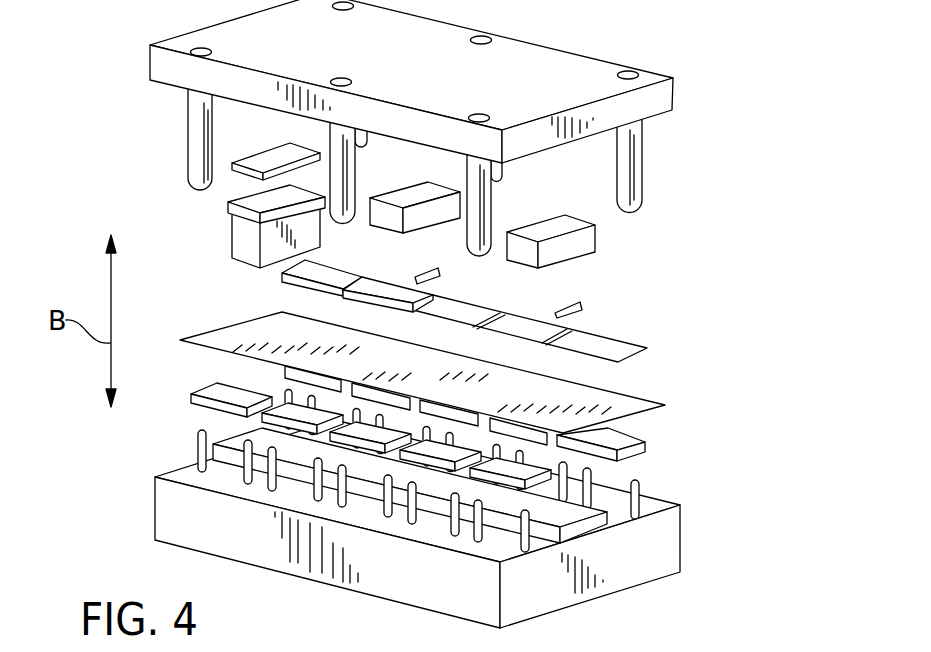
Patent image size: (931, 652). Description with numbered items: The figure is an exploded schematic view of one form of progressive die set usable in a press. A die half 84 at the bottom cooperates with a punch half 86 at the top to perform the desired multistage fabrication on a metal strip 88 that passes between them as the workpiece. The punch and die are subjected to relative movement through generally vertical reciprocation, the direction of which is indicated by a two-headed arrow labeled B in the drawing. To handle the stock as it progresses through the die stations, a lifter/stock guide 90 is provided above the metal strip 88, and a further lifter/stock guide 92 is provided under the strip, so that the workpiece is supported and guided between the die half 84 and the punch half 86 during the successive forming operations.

The die half 84 is at (577, 532).
The punch half 86 is at (587, 243).
The metal strip 88 is at (625, 403).
The lifter/stock guide 90 is at (282, 282).
The lifter/stock guide 92 is at (283, 378).